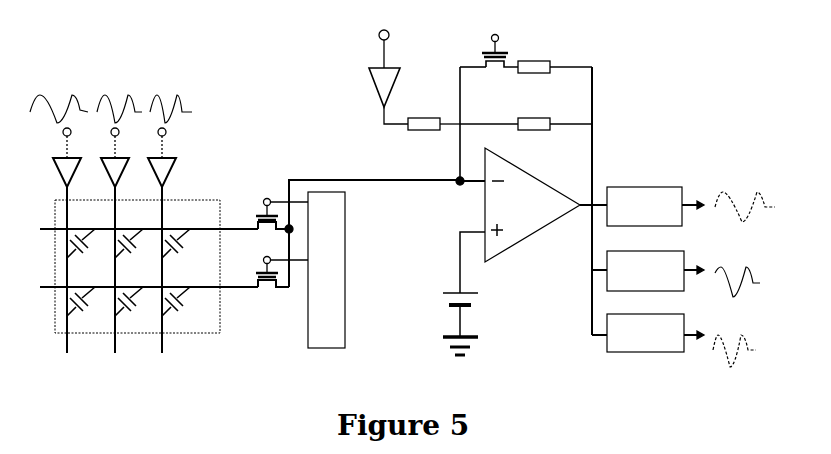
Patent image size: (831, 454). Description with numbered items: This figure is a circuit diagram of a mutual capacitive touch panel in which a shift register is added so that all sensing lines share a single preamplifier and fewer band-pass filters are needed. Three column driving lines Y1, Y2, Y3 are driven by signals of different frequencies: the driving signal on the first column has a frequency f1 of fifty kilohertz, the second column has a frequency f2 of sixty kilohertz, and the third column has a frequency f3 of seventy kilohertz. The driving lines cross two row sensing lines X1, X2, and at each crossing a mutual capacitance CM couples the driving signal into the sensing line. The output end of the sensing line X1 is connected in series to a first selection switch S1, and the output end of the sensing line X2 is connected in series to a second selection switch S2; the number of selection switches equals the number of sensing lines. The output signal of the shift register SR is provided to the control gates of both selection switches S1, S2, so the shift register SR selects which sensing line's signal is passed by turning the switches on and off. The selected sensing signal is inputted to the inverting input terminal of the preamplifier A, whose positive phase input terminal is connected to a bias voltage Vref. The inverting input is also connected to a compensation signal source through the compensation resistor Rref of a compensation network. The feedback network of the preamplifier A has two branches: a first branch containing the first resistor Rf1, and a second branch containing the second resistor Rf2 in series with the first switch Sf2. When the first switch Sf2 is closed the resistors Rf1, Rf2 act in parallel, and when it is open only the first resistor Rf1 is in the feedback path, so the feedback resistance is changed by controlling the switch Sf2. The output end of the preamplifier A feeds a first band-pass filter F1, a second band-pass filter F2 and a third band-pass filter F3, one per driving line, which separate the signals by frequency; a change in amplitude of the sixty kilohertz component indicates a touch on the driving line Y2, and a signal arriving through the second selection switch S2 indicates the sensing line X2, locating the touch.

The frequency of the driving signal in the first column of driving line f1 is at (402, 150).
The frequency of the driving signal in the second column of driving line f2 is at (428, 187).
The frequency of the driving signal in the third column of driving line f3 is at (453, 222).
The sensing line X1 is at (135, 229).
The sensing line X2 is at (135, 287).
The driving line Y1 is at (67, 254).
The driving line Y2 is at (115, 254).
The driving line Y3 is at (162, 254).
The mutual capacitance CM is at (133, 282).
The first selection switch S1 is at (282, 203).
The second selection switch S2 is at (282, 262).
The shift register SR is at (326, 282).
The preamplifier A is at (524, 208).
The bias voltage Vref is at (483, 293).
The compensation resistor Rref is at (414, 80).
The first resistor Rf1 is at (526, 114).
The second resistor Rf2 is at (555, 58).
The first switch Sf2 is at (489, 39).
The first band-pass filter F1 is at (648, 193).
The second band-pass filter F2 is at (648, 261).
The third band-pass filter F3 is at (648, 324).